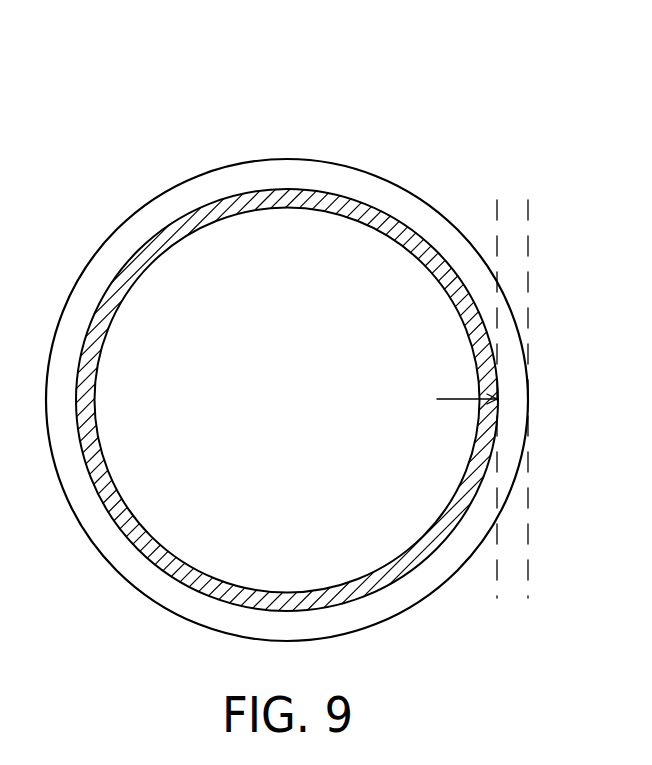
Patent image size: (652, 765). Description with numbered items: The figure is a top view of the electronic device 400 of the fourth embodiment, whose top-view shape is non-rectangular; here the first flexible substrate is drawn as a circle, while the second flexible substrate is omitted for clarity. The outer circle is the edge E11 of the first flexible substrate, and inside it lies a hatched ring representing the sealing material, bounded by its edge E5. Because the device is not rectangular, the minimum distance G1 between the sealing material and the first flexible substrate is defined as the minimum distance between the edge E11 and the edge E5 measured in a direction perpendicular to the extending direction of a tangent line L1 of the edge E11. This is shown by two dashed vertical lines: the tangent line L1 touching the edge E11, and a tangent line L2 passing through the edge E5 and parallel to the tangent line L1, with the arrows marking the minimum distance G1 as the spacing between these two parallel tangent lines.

The electronic device 400 is at (342, 340).
The edge of the first flexible substrate E11 is at (372, 174).
The edge of the sealing material E5 is at (433, 550).
The tangent line of the edge of the first flexible substrate L1 is at (528, 233).
The tangent line passing through the edge of the sealing material L2 is at (497, 233).
The minimum distance G1 is at (528, 399).